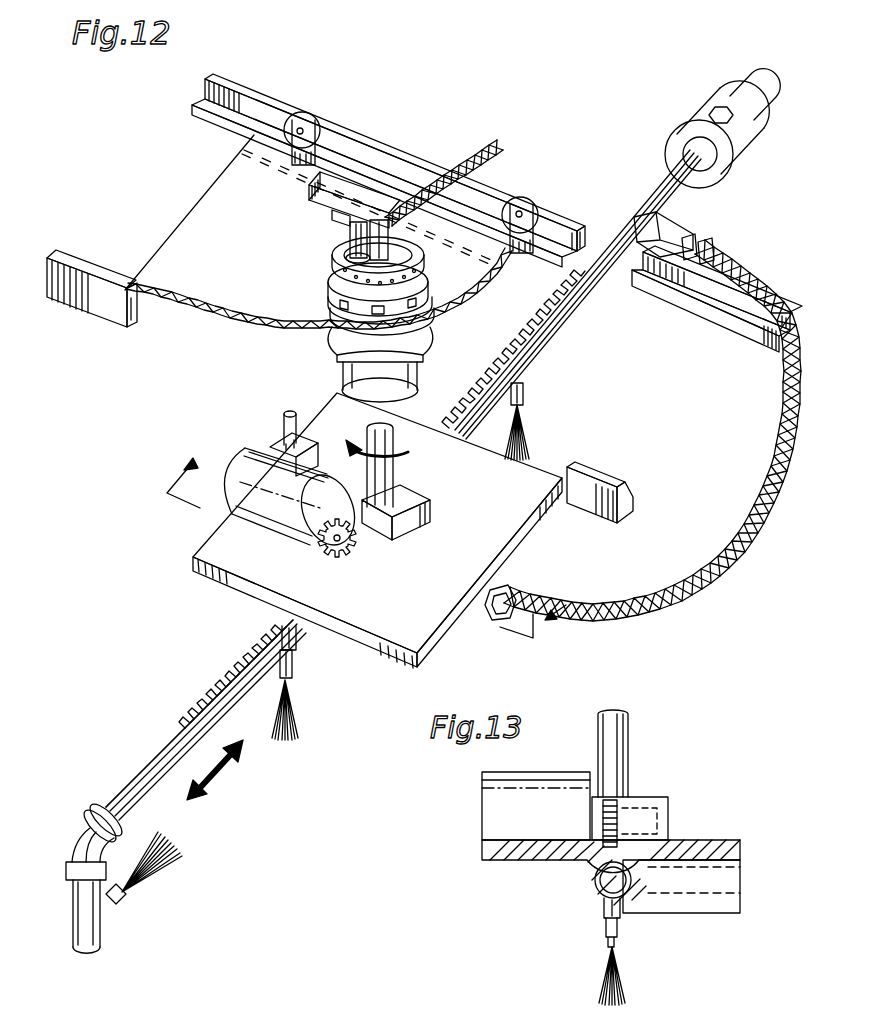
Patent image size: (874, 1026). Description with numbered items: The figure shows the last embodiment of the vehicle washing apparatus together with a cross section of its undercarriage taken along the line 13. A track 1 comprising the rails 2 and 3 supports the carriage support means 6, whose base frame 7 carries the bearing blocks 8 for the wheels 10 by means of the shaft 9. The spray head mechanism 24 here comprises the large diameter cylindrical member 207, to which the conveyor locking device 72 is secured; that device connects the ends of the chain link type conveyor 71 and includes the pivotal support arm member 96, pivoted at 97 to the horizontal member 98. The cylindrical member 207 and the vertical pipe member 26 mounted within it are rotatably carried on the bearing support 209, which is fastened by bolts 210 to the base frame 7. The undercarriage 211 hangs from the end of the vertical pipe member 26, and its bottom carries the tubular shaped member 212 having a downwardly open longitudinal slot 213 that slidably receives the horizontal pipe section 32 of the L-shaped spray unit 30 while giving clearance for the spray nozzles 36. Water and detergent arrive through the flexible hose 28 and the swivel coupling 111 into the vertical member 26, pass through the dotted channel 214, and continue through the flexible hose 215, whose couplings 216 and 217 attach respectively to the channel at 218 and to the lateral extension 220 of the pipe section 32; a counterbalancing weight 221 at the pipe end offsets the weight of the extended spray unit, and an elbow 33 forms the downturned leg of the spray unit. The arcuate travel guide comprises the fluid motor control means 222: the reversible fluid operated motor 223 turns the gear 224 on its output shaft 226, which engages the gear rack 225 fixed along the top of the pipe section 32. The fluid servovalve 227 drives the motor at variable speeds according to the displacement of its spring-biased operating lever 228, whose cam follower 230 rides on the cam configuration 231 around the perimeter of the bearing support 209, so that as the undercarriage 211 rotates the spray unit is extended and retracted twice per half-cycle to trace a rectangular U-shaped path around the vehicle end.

In FIG. 12, the track 1 is at (246, 98).
In FIG. 12, the rail 2 is at (226, 92).
In FIG. 12, the rail 3 is at (63, 262).
In FIG. 12, the carriage support means 6 is at (205, 190).
In FIG. 12, the base frame 7 is at (168, 236).
In FIG. 12, the bearing block 8 is at (388, 158).
In FIG. 12, the shaft 9 is at (316, 138).
In FIG. 12, the wheel 10 is at (298, 114).
In FIG. 12, the section line 13 is at (375, 529).
In FIG. 12, the spray head mechanism 24 is at (420, 284).
In FIG. 12, the vertical pipe member 26 is at (395, 468).
In FIG. 13, the vertical pipe member 26 is at (630, 748).
In FIG. 12, the flexible hose 28 is at (463, 150).
In FIG. 12, the L-shaped spray unit 30 is at (150, 778).
In FIG. 13, the L-shaped spray unit 30 is at (600, 880).
In FIG. 12, the horizontal pipe section 32 is at (171, 744).
In FIG. 13, the horizontal pipe section 32 is at (632, 881).
In FIG. 12, the elbow pipe 33 is at (82, 918).
In FIG. 12, the spray nozzle 36 is at (526, 395).
In FIG. 13, the spray nozzle 36 is at (620, 930).
In FIG. 12, the chain link type conveyor 71 is at (262, 163).
In FIG. 12, the conveyor locking device 72 is at (306, 198).
In FIG. 12, the pivotal support arm member 96 is at (334, 222).
In FIG. 12, the pivot 97 is at (350, 246).
In FIG. 12, the horizontal member 98 is at (352, 262).
In FIG. 12, the swivel coupling 111 is at (384, 224).
In FIG. 12, the large diameter cylindrical member 207 is at (422, 265).
In FIG. 12, the bearing support 209 is at (340, 292).
In FIG. 12, the bolt 210 is at (402, 306).
In FIG. 12, the undercarriage 211 is at (233, 576).
In FIG. 13, the undercarriage 211 is at (492, 858).
In FIG. 12, the tubular shaped member 212 is at (297, 646).
In FIG. 13, the tubular shaped member 212 is at (600, 898).
In FIG. 13, the longitudinal slot 213 is at (605, 920).
In FIG. 13, the channel 214 is at (660, 826).
In FIG. 12, the flexible hose 215 is at (722, 552).
In FIG. 12, the coupling 216 is at (508, 600).
In FIG. 12, the coupling 217 is at (702, 250).
In FIG. 13, the connection point 218 is at (742, 882).
In FIG. 12, the lateral extension 220 is at (667, 228).
In FIG. 12, the counterbalancing weight 221 is at (725, 96).
In FIG. 12, the fluid motor control means 222 is at (245, 492).
In FIG. 13, the fluid motor control means 222 is at (482, 830).
In FIG. 12, the fluid operated motor 223 is at (293, 506).
In FIG. 13, the fluid operated motor 223 is at (488, 806).
In FIG. 12, the gear 224 is at (345, 540).
In FIG. 13, the gear 224 is at (625, 800).
In FIG. 12, the gear rack 225 is at (243, 662).
In FIG. 12, the output shaft 226 is at (322, 548).
In FIG. 13, the output shaft 226 is at (600, 816).
In FIG. 12, the fluid servovalve 227 is at (284, 456).
In FIG. 12, the operating lever 228 is at (286, 440).
In FIG. 12, the cam follower 230 is at (296, 416).
In FIG. 12, the cam configuration 231 is at (428, 347).